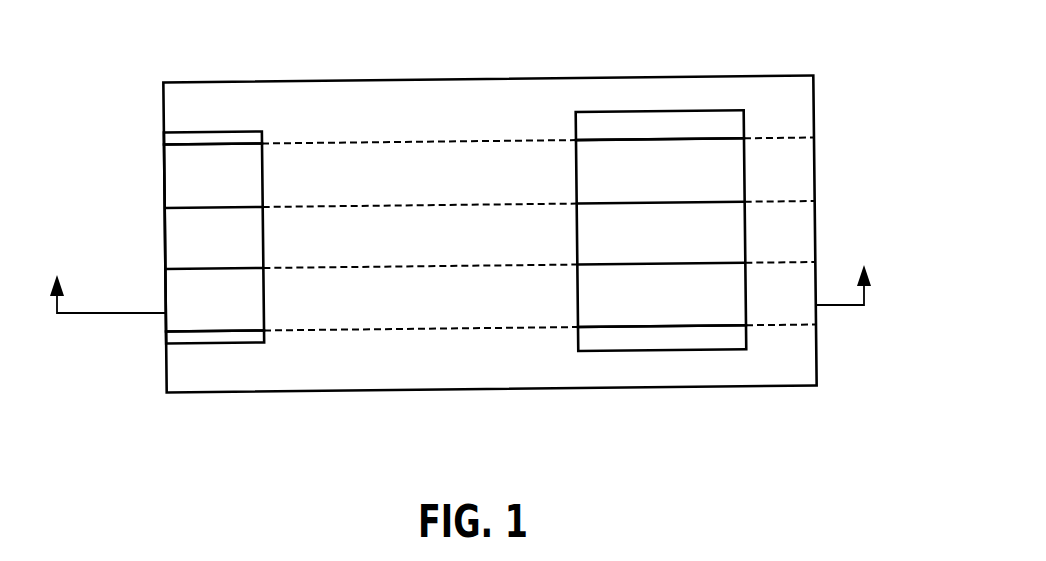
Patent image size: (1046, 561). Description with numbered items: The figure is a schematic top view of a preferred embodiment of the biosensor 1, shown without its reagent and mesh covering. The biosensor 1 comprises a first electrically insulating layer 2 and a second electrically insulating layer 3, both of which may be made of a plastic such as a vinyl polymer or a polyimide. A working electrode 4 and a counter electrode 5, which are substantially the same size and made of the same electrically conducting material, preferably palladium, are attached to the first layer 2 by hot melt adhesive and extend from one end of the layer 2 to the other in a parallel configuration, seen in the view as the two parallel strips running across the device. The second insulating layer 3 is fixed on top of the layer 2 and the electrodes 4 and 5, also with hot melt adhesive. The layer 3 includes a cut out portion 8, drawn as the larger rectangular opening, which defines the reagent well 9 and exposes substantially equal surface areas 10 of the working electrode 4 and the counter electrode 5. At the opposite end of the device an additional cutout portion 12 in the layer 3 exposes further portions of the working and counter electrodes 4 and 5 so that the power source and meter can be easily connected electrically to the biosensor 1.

The biosensor 1 is at (826, 104).
The first electrically insulating layer 2 is at (720, 245).
The second electrically insulating layer 3 is at (787, 353).
The working electrode 4 is at (180, 283).
The counter electrode 5 is at (177, 160).
The cut out portion 8 is at (712, 108).
The reagent well 9 is at (705, 340).
The exposed surface areas of electrodes 10 is at (633, 178).
The additional cutout portion 12 is at (192, 345).